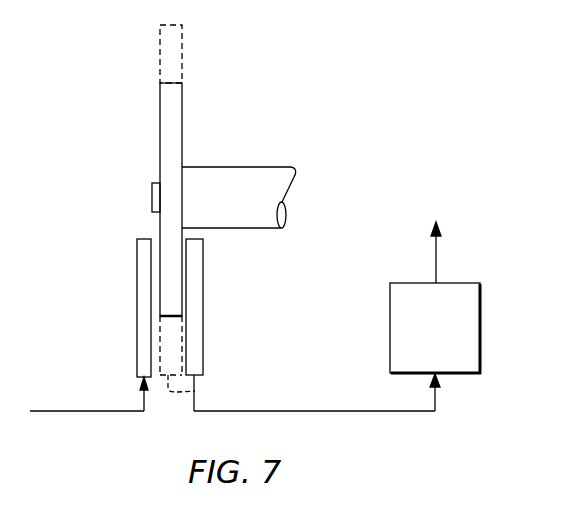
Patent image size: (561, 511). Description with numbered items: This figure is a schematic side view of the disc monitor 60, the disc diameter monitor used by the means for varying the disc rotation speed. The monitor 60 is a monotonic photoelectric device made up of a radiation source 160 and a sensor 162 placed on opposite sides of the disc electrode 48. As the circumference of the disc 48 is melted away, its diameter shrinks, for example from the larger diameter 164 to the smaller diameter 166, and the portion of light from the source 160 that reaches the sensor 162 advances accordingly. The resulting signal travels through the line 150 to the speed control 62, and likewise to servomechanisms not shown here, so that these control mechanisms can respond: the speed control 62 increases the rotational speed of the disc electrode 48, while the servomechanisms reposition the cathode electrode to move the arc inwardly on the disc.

The disc electrode 48 is at (182, 110).
The disc monitor 60 is at (160, 405).
The speed control 62 is at (480, 375).
The line 150 is at (338, 409).
The radiation source 160 is at (137, 275).
The sensor 162 is at (203, 278).
The initial disc diameter 164 is at (197, 390).
The reduced disc diameter 166 is at (172, 317).